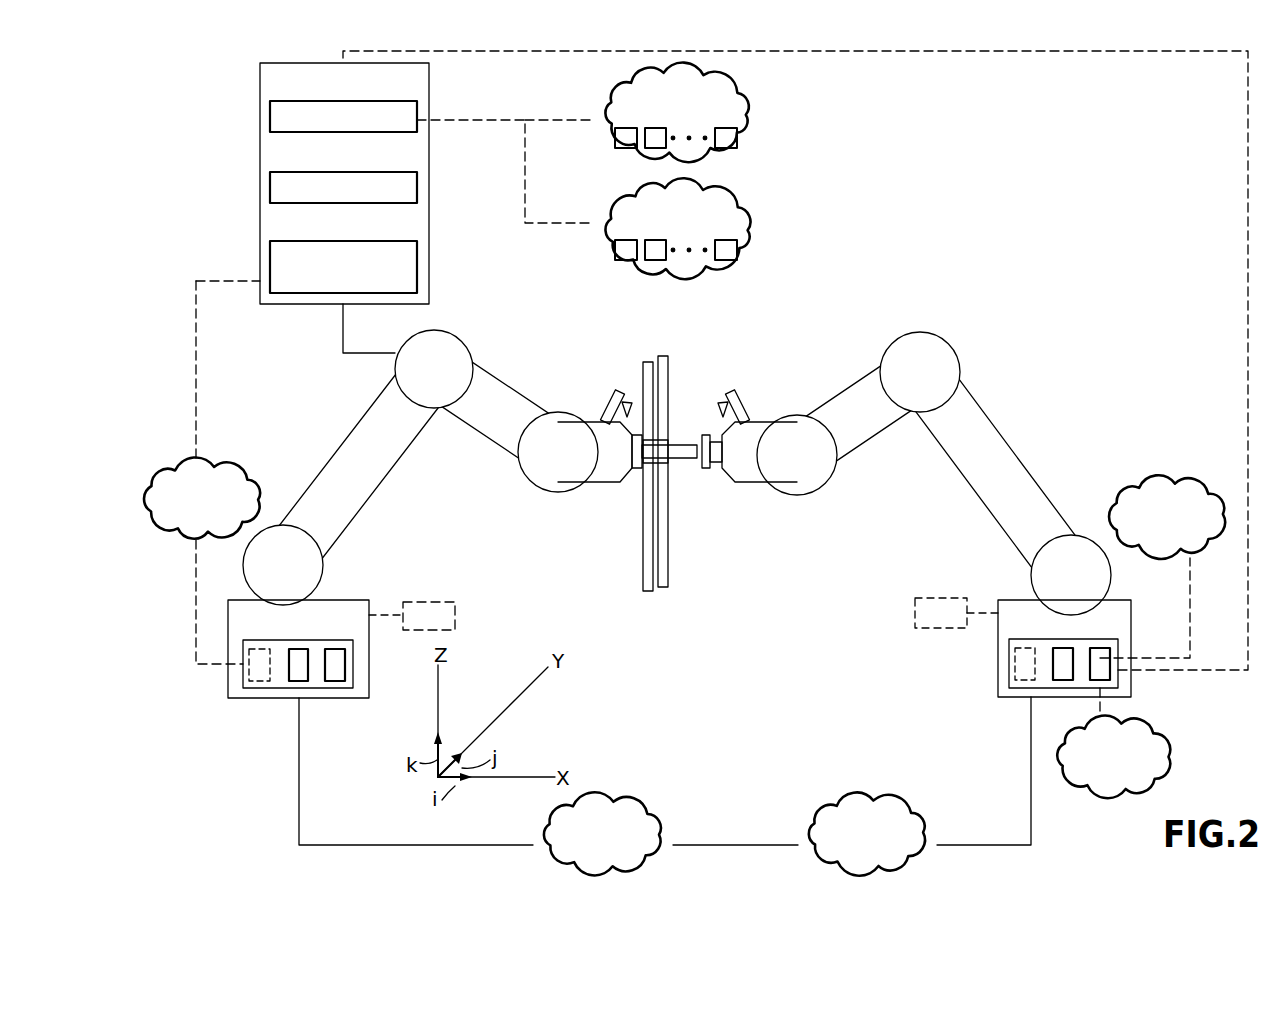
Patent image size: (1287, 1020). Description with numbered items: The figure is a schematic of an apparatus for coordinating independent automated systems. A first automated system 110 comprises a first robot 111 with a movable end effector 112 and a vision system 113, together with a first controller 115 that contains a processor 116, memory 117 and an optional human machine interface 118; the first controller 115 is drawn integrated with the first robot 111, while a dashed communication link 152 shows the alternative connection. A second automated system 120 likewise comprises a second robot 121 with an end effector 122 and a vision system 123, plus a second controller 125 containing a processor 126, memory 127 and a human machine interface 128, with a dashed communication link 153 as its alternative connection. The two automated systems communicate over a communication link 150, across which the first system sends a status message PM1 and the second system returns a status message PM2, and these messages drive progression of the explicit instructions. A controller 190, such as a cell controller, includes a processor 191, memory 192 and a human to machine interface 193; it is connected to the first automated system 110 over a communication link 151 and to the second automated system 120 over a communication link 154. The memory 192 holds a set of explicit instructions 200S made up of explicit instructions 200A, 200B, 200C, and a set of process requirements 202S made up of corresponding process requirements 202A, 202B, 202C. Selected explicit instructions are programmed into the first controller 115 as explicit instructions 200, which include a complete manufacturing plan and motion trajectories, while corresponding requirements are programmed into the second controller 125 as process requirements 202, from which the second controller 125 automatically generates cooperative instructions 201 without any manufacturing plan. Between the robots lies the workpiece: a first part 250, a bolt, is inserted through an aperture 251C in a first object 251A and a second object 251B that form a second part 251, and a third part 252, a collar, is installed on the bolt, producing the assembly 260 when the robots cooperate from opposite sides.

The first automated system 110 is at (421, 534).
The first robot 111 is at (352, 418).
The end effector 112 is at (600, 485).
The vision system 113 is at (605, 408).
The first controller 115 is at (353, 672).
The processor 116 is at (298, 649).
The memory 117 is at (333, 683).
The human machine interface 118 is at (258, 683).
The second automated system 120 is at (907, 536).
The second robot 121 is at (1023, 436).
The end effector 122 is at (748, 483).
The vision system 123 is at (743, 402).
The second controller 125 is at (915, 613).
The processor 126 is at (1063, 648).
The memory 127 is at (1102, 652).
The human machine interface 128 is at (1018, 660).
The communication link 150 is at (732, 845).
The communication link 151 is at (343, 335).
The communication link 152 is at (388, 612).
The communication link 153 is at (990, 612).
The communication link 154 is at (1246, 218).
The controller 190 is at (260, 183).
The processor 191 is at (367, 204).
The memory 192 is at (358, 133).
The human to machine interface 193 is at (335, 241).
The explicit instructions 200 is at (158, 542).
The explicit instruction 200A is at (620, 128).
The explicit instruction 200B is at (650, 147).
The explicit instruction 200C is at (735, 135).
The set of explicit instructions 200S is at (763, 90).
The cooperative instructions 201 is at (1105, 798).
The process requirements 202 is at (1172, 478).
The process requirement 202A is at (618, 248).
The process requirement 202B is at (648, 260).
The process requirement 202C is at (737, 248).
The set of process requirements 202S is at (765, 200).
The first part 250 is at (683, 444).
The second part 251 is at (657, 490).
The first object 251A is at (643, 545).
The second object 251B is at (670, 570).
The aperture 251C is at (655, 467).
The third part 252 is at (705, 468).
The assembly 260 is at (657, 504).
The status message PM1 is at (605, 793).
The status message PM2 is at (865, 792).